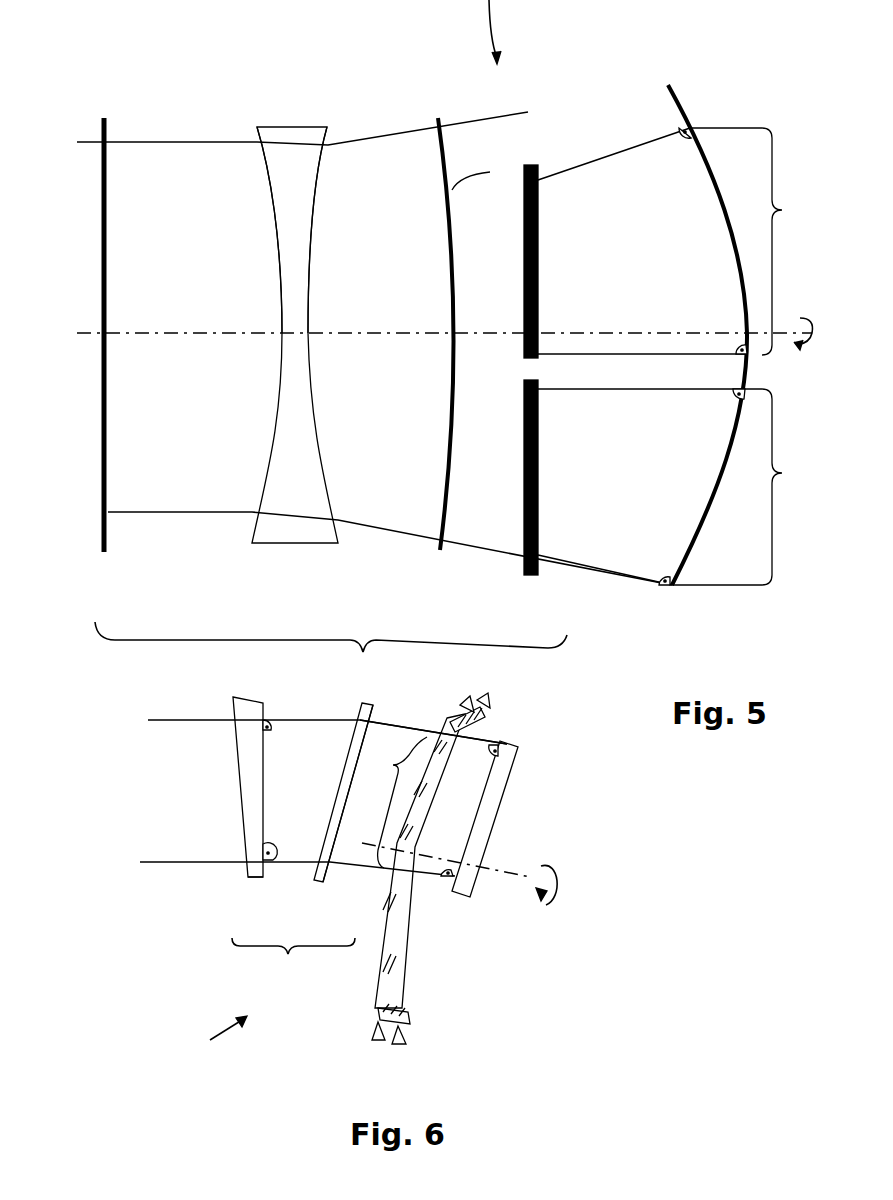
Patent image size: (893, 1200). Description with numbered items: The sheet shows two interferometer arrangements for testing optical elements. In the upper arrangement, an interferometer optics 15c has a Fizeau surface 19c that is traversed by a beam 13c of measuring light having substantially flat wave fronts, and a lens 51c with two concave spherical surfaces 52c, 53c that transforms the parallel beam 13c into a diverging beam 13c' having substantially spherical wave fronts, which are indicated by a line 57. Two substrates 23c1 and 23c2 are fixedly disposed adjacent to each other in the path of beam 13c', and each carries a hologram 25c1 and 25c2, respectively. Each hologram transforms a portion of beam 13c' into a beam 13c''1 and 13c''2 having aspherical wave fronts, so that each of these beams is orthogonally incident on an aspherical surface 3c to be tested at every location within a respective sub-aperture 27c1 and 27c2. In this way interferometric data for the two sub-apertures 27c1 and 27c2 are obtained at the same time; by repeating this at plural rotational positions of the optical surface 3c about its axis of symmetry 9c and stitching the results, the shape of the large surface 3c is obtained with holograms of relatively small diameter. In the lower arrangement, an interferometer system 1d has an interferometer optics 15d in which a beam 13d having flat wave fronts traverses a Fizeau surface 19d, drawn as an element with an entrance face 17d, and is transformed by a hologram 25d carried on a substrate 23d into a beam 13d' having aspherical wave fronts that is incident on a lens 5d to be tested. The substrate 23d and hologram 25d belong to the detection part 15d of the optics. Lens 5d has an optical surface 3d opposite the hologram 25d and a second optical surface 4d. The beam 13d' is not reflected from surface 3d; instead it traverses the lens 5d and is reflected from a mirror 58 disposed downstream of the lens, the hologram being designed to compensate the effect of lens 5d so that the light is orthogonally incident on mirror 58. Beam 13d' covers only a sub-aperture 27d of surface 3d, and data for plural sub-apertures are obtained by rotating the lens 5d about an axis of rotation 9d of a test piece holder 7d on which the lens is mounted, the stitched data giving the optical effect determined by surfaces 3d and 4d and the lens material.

In FIG. 5, the axis of symmetry 9c is at (662, 332).
In FIG. 5, the beam of measuring light 13c is at (374, 329).
In FIG. 5, the Fizeau surface 19c is at (105, 120).
In FIG. 5, the lens 51c is at (293, 125).
In FIG. 5, the concave spherical surface 53c is at (258, 126).
In FIG. 5, the concave spherical surface 52c is at (330, 137).
In FIG. 5, the diverging beam 13c' is at (457, 361).
In FIG. 5, the line indicating spherical wave fronts 57 is at (483, 176).
In FIG. 5, the substrate 23c1 is at (529, 165).
In FIG. 5, the substrate 23c2 is at (531, 575).
In FIG. 5, the hologram 25c1 is at (539, 177).
In FIG. 5, the hologram 25c2 is at (540, 561).
In FIG. 5, the beam having aspherical wave fronts 13c''1 is at (642, 216).
In FIG. 5, the beam having aspherical wave fronts 13c''2 is at (650, 523).
In FIG. 5, the aspherical surface 3c is at (668, 83).
In FIG. 5, the sub-aperture 27c1 is at (794, 241).
In FIG. 5, the sub-aperture 27c2 is at (794, 487).
In FIG. 5, the interferometer optics 15c is at (331, 649).
In FIG. 6, the beam having flat wave fronts 13d is at (323, 824).
In FIG. 6, the Fizeau surface 19d is at (259, 705).
In FIG. 6, the entrance surface 17d is at (256, 880).
In FIG. 6, the substrate 23d is at (320, 879).
In FIG. 6, the hologram 25d is at (323, 883).
In FIG. 6, the interferometer optics 15d is at (293, 962).
In FIG. 6, the beam having aspherical wave fronts 13d' is at (433, 709).
In FIG. 6, the mirror 58 is at (504, 744).
In FIG. 6, the axis of rotation 9d is at (528, 873).
In FIG. 6, the optical surface 4d is at (402, 995).
In FIG. 6, the sub-aperture 27d is at (393, 802).
In FIG. 6, the optical surface 3d is at (375, 996).
In FIG. 6, the test piece holder 7d is at (410, 1021).
In FIG. 6, the lens to be tested 5d is at (378, 1022).
In FIG. 6, the interferometer system 1d is at (214, 1040).